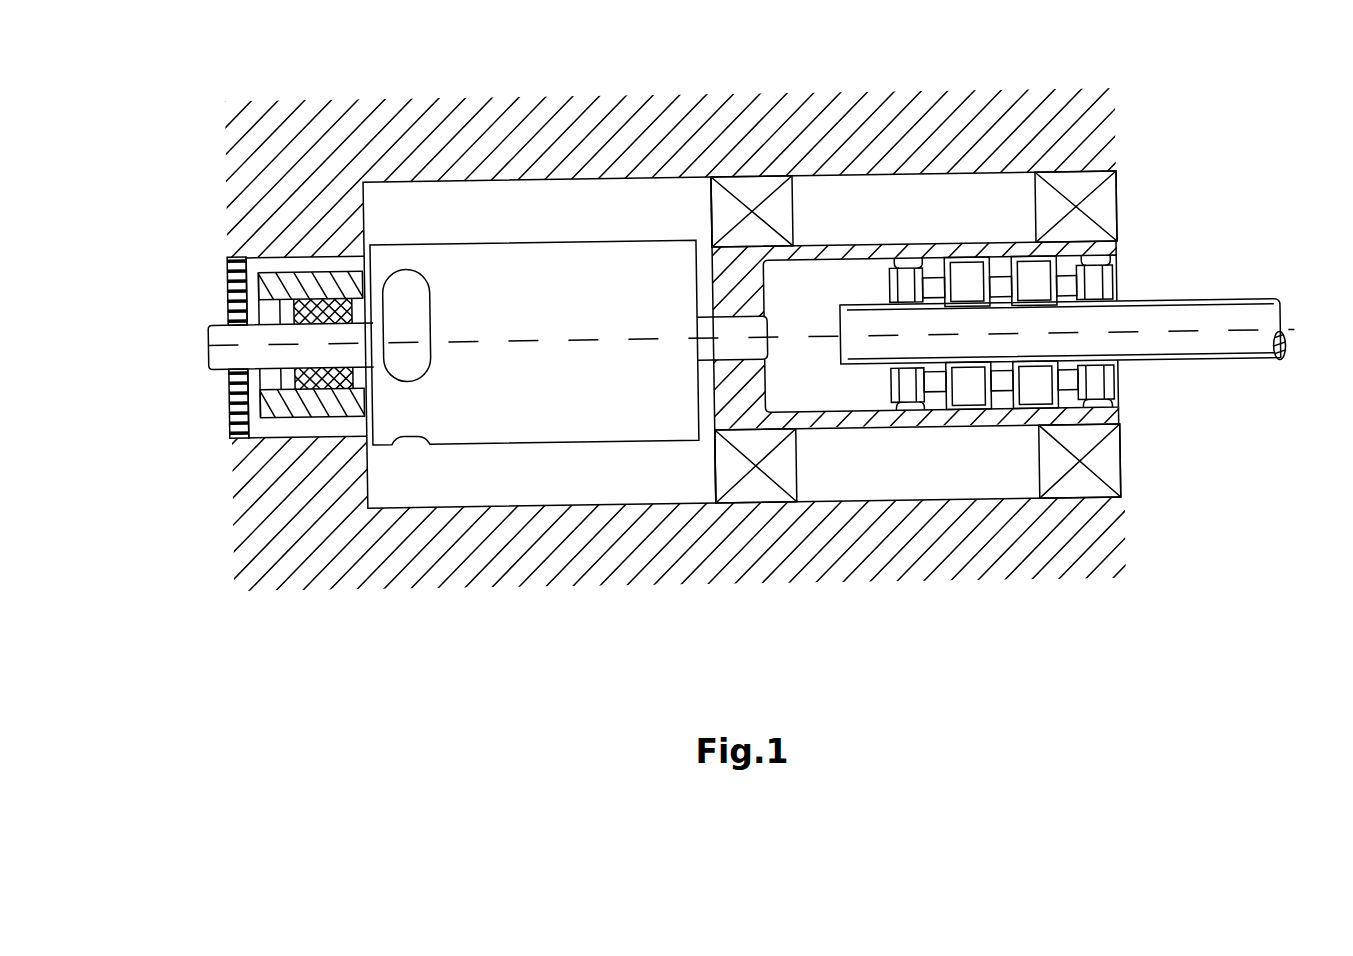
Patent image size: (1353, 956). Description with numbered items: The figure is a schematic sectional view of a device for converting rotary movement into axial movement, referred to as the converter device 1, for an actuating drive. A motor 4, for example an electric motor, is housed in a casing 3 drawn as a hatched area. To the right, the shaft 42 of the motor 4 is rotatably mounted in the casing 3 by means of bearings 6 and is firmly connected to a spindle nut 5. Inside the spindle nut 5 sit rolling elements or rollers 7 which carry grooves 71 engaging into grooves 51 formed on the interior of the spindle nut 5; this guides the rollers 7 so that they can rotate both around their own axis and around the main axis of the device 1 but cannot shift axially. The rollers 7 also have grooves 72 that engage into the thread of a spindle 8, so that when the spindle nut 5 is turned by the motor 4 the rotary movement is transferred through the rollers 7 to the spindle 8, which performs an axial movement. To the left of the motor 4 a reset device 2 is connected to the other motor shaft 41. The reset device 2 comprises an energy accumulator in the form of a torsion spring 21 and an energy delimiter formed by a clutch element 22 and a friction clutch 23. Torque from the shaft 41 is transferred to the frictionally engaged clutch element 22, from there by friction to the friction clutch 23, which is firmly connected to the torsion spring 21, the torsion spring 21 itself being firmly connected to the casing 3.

The converter device 1 is at (676, 331).
The reset device 2 is at (241, 346).
The torsion spring 21 is at (235, 286).
The clutch element 22 is at (318, 301).
The friction clutch 23 is at (272, 400).
The casing 3 is at (380, 110).
The motor 4 is at (478, 420).
The shaft 41 is at (226, 333).
The shaft 42 is at (710, 332).
The spindle nut 5 is at (840, 419).
The grooves 51 is at (938, 273).
The bearings 6 is at (752, 194).
The rolling elements or rollers 7 is at (1107, 290).
The grooves 71 is at (1002, 404).
The grooves 72 is at (1050, 422).
The spindle 8 is at (1267, 326).